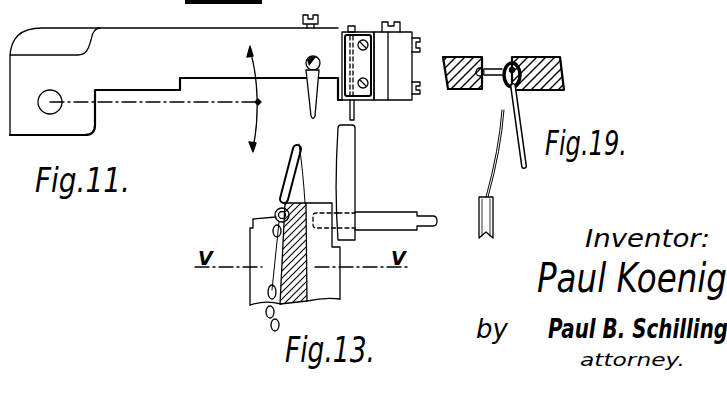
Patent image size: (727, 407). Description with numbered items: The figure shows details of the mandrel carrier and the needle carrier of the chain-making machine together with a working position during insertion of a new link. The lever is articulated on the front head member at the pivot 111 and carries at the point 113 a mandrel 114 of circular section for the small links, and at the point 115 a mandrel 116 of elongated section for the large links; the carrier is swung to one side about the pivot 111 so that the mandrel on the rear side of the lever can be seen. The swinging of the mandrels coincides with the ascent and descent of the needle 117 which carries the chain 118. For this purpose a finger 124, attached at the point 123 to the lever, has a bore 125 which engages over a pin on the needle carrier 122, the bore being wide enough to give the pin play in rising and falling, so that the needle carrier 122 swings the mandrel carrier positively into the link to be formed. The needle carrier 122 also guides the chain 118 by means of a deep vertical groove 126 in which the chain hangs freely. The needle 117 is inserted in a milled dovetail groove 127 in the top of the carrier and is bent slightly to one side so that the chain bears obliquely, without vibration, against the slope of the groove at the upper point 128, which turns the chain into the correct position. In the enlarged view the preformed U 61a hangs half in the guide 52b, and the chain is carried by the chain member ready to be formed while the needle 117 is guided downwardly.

In FIG. 11, the pivot 111 is at (50, 108).
In FIG. 11, the mounting point of mandrel 113 is at (308, 62).
In FIG. 11, the mandrel of circular section 114 is at (312, 92).
In FIG. 11, the mounting point of mandrel 115 is at (345, 42).
In FIG. 11, the mandrel of elongated section 116 is at (357, 110).
In FIG. 11, the attachment point of finger 123 is at (388, 60).
In FIG. 13, the carrying needle 117 is at (305, 190).
In FIG. 19, the carrying needle 117 is at (497, 150).
In FIG. 13, the chain 118 is at (277, 209).
In FIG. 13, the needle carrier 122 is at (397, 220).
In FIG. 13, the finger 124 is at (357, 137).
In FIG. 13, the bore 125 is at (347, 220).
In FIG. 13, the vertical groove 126 is at (255, 290).
In FIG. 13, the dovetail groove 127 is at (301, 222).
In FIG. 13, the slope 128 is at (277, 220).
In FIG. 19, the guide 52b is at (470, 57).
In FIG. 19, the U 61a is at (493, 68).